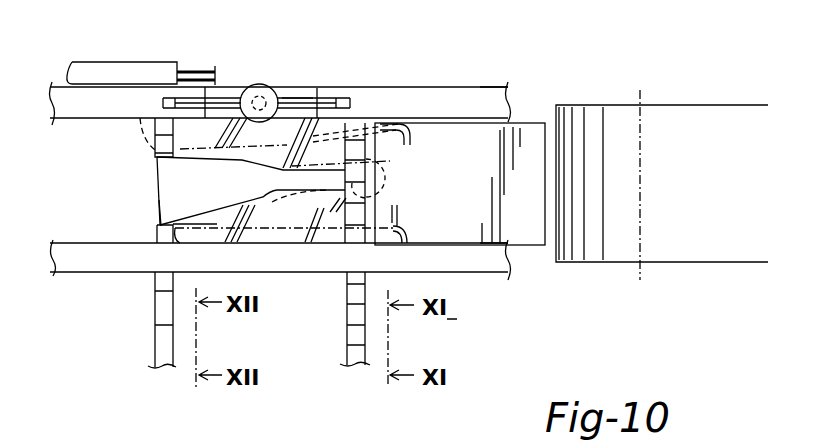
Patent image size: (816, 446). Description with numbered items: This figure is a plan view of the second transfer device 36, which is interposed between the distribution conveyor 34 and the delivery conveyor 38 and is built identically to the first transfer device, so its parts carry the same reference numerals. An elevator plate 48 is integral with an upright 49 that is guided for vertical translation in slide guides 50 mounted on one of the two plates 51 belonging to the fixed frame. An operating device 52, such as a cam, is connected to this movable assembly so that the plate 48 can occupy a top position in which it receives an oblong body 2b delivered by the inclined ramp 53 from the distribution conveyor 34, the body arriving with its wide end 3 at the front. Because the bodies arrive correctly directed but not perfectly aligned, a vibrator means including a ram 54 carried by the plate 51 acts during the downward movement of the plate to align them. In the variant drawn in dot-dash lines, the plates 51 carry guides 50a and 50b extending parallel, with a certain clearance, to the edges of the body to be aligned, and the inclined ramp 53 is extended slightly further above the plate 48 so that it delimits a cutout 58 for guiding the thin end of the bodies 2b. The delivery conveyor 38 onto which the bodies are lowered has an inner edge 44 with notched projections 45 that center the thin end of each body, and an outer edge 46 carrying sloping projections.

The oblong body 2b is at (267, 199).
The wide end 3 is at (207, 196).
The distribution conveyor 34 is at (688, 118).
The transfer device 36 is at (418, 80).
The delivery conveyor 38 is at (331, 341).
The inner edge 44 is at (347, 133).
The notched projections 45 is at (378, 194).
The outer edge 46 is at (157, 221).
The elevator plate 48 is at (201, 137).
The upright 49 is at (295, 98).
The slide guides 50 is at (164, 102).
The guide 50a is at (150, 148).
The guide 50b is at (145, 232).
The plate 51 is at (483, 100).
The operating device 52 is at (256, 84).
The inclined ramp 53 is at (460, 193).
The ram 54 is at (93, 64).
The cutout 58 is at (386, 167).